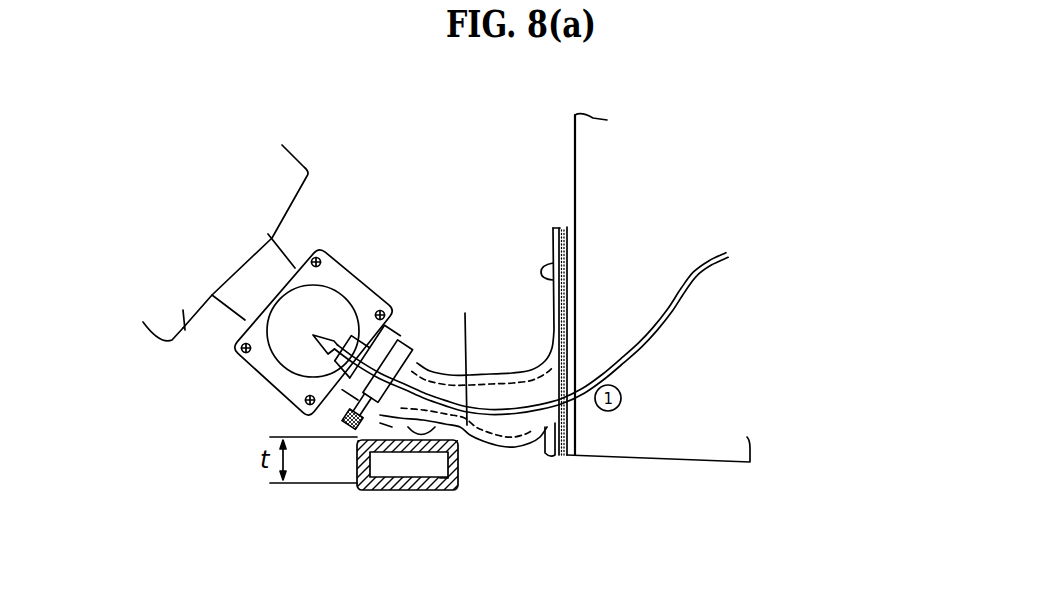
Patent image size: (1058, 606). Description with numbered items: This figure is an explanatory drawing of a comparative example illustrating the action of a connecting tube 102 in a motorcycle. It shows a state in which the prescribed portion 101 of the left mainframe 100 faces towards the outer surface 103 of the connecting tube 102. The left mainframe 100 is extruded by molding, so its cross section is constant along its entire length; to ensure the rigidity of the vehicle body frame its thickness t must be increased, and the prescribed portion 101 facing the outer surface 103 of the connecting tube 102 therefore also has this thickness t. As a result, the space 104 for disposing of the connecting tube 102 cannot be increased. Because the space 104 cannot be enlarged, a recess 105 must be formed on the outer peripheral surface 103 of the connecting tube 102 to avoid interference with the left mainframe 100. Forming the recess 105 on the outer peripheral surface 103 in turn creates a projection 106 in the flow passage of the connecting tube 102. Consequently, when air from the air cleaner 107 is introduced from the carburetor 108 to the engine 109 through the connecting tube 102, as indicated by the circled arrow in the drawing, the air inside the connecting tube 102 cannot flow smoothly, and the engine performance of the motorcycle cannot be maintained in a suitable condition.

The left mainframe 100 is at (397, 490).
The prescribed portion 101 is at (447, 492).
The connecting tube 102 is at (520, 366).
The outer surface 103 is at (438, 431).
The space 104 is at (386, 430).
The recess 105 is at (460, 433).
The projection 106 is at (465, 313).
The air cleaner 107 is at (714, 445).
The carburetor 108 is at (349, 278).
The engine 109 is at (185, 328).